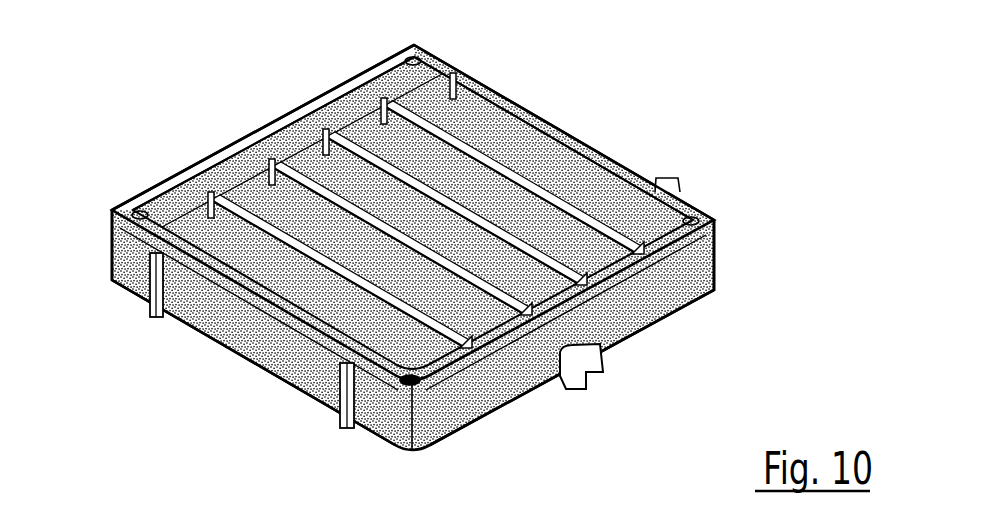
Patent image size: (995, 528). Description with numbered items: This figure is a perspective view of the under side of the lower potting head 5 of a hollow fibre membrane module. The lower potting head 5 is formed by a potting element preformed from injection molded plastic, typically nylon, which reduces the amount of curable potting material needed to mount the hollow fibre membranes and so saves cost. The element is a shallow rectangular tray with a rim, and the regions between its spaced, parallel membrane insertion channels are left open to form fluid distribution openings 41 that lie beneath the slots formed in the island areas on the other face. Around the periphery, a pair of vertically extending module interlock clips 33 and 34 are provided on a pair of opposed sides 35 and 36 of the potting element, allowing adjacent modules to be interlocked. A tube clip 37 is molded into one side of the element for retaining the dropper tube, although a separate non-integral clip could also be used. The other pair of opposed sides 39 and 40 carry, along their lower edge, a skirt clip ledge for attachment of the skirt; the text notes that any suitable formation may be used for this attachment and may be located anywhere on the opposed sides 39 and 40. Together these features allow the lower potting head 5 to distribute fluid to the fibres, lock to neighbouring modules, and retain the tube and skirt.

The lower potting head 5 is at (757, 222).
The module interlock clip 33 is at (150, 297).
The module interlock clip 34 is at (347, 427).
The side of the potting element 35 is at (577, 137).
The side of the potting element 36 is at (250, 353).
The tube clip 37 is at (585, 372).
The side of the potting element 39 is at (660, 310).
The side of the potting element 40 is at (212, 150).
The fluid distribution opening 41 is at (467, 85).